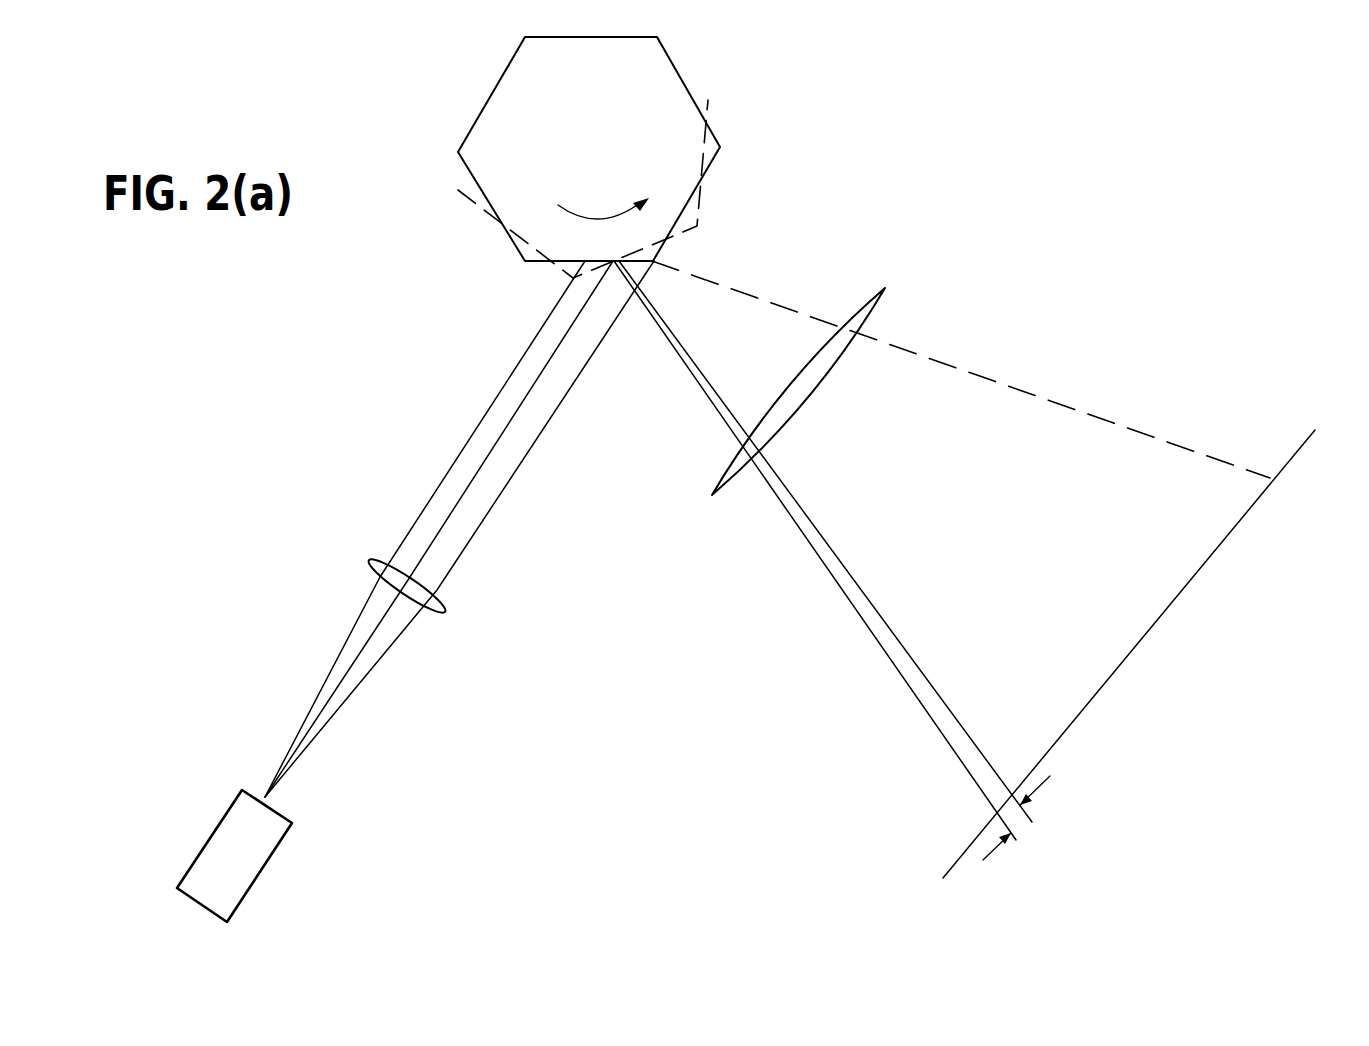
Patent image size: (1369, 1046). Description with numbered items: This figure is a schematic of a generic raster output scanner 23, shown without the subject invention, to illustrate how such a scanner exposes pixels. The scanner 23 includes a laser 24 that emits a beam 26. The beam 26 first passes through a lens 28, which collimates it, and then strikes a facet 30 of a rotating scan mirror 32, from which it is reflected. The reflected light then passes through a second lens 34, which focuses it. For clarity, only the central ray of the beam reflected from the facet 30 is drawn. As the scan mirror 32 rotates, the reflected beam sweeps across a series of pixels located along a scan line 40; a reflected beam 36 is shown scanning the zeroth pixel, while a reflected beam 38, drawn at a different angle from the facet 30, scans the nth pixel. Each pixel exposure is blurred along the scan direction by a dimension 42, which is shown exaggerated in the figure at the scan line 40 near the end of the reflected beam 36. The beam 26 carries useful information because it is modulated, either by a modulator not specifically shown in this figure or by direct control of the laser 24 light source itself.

The raster output scanner 23 is at (1099, 160).
The laser 24 is at (238, 793).
The beam 26 is at (517, 470).
The lens 28 is at (368, 560).
The facet 30 is at (530, 262).
The rotating scan mirror 32 is at (720, 147).
The lens 34 is at (885, 288).
The reflected beam 36 is at (873, 613).
The reflected beam 38 is at (1070, 408).
The scan line 40 is at (1128, 653).
The dimension 42 is at (1030, 818).